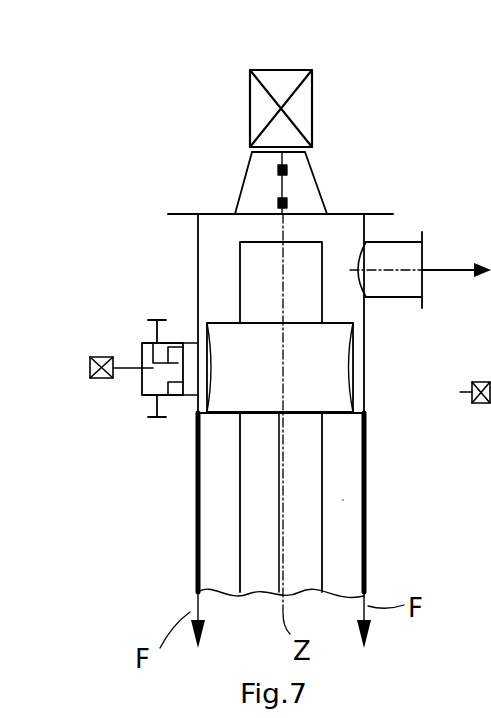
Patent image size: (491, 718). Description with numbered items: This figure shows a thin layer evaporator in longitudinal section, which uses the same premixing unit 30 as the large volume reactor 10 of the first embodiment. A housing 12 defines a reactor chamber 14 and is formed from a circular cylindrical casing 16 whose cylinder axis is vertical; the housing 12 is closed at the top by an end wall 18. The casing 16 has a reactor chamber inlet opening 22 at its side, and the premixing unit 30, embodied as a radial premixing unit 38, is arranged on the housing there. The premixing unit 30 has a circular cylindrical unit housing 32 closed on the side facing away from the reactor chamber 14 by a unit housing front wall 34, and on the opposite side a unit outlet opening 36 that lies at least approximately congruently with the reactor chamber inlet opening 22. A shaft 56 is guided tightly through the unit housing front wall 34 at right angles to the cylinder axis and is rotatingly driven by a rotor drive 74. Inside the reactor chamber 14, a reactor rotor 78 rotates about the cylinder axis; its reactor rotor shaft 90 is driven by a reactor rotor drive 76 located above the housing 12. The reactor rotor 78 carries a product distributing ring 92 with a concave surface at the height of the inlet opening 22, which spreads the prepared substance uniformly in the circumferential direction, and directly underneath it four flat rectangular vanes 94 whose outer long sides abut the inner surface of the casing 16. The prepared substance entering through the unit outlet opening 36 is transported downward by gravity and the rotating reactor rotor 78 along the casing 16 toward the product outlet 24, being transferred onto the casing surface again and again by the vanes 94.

The large volume reactor 10 is at (391, 84).
The housing 12 is at (213, 204).
The reactor chamber 14 is at (357, 367).
The casing 16 is at (366, 393).
The end wall 18 is at (345, 212).
The reactor chamber inlet opening 22 is at (157, 325).
The unit outlet opening 36 is at (197, 357).
The product outlet 24 is at (398, 252).
The premixing unit 30 is at (105, 405).
The radial premixing unit 38 is at (122, 390).
The unit housing 32 is at (181, 403).
The unit housing front wall 34 is at (143, 344).
The shaft 56 is at (130, 362).
The rotor drive 74 is at (90, 367).
The reactor rotor drive 76 is at (300, 107).
The reactor rotor 78 is at (348, 493).
The reactor rotor shaft 90 is at (250, 262).
The product distributing ring 92 is at (333, 345).
The vanes 94 is at (220, 508).